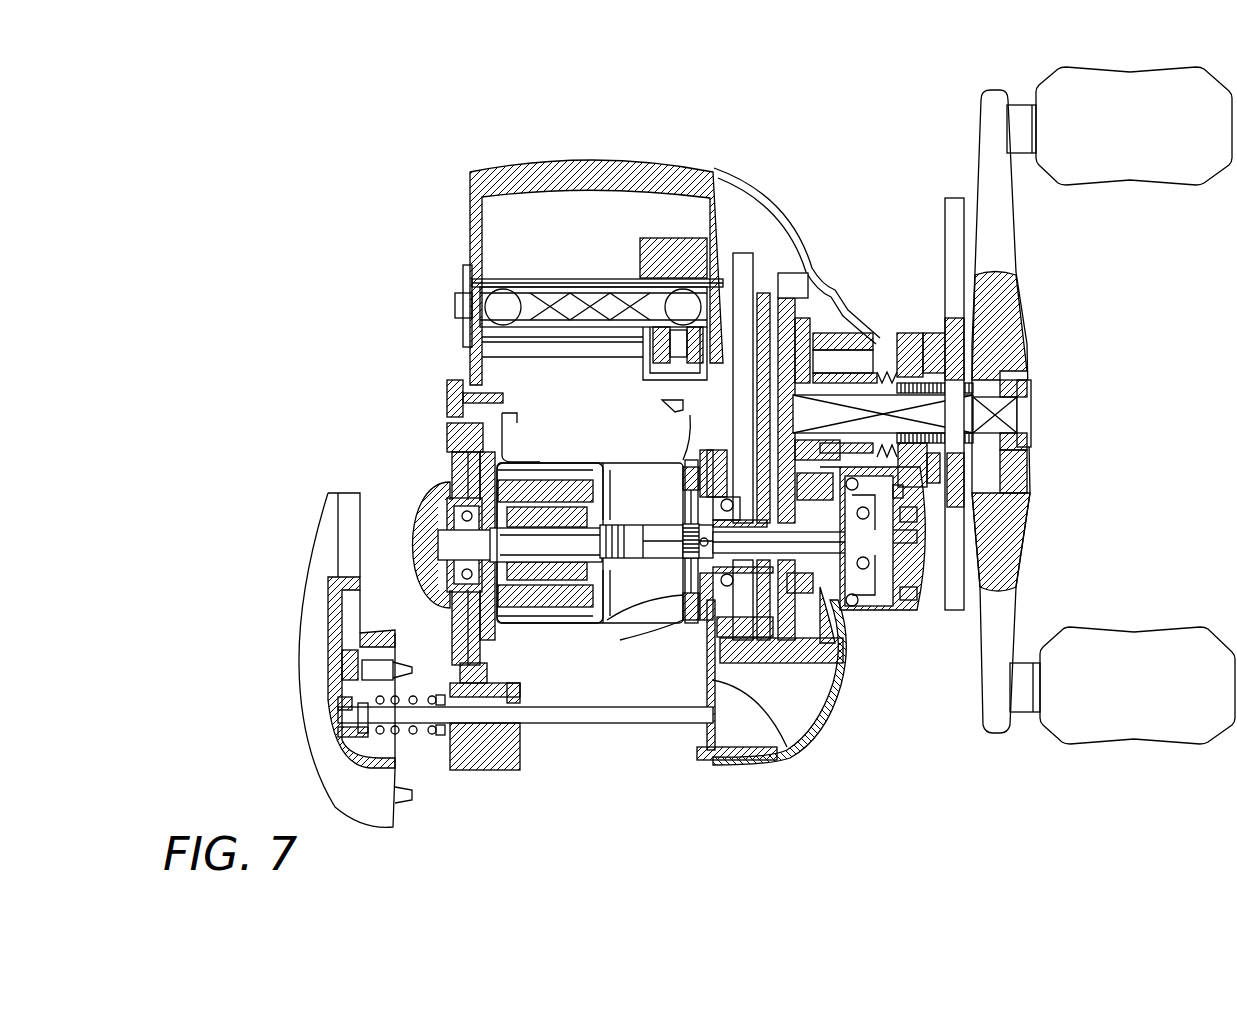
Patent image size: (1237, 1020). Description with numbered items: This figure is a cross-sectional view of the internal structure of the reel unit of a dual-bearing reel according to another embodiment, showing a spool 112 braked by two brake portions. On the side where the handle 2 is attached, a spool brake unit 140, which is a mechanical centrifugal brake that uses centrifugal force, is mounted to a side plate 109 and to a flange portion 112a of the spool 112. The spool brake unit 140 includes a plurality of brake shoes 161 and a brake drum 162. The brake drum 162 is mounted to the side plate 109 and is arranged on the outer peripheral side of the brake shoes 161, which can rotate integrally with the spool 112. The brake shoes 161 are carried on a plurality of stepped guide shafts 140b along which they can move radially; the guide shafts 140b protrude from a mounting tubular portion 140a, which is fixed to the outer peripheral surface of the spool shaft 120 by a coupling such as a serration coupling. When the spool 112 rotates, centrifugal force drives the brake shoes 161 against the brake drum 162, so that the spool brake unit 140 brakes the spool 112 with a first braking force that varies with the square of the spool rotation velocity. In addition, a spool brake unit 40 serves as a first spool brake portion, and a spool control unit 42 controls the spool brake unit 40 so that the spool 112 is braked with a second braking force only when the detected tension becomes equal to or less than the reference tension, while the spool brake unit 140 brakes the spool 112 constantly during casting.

The handle 2 is at (1036, 280).
The spool brake unit 40 is at (542, 485).
The spool control unit 42 is at (492, 460).
The side plate 109 is at (780, 748).
The spool 112 is at (612, 458).
The flange portion 112a is at (687, 413).
The spool shaft 120 is at (663, 527).
The spool brake unit 140 is at (740, 385).
The mounting tubular portion 140a is at (668, 575).
The guide shafts 140b is at (668, 617).
The brake shoes 161 is at (668, 612).
The brake drum 162 is at (673, 628).